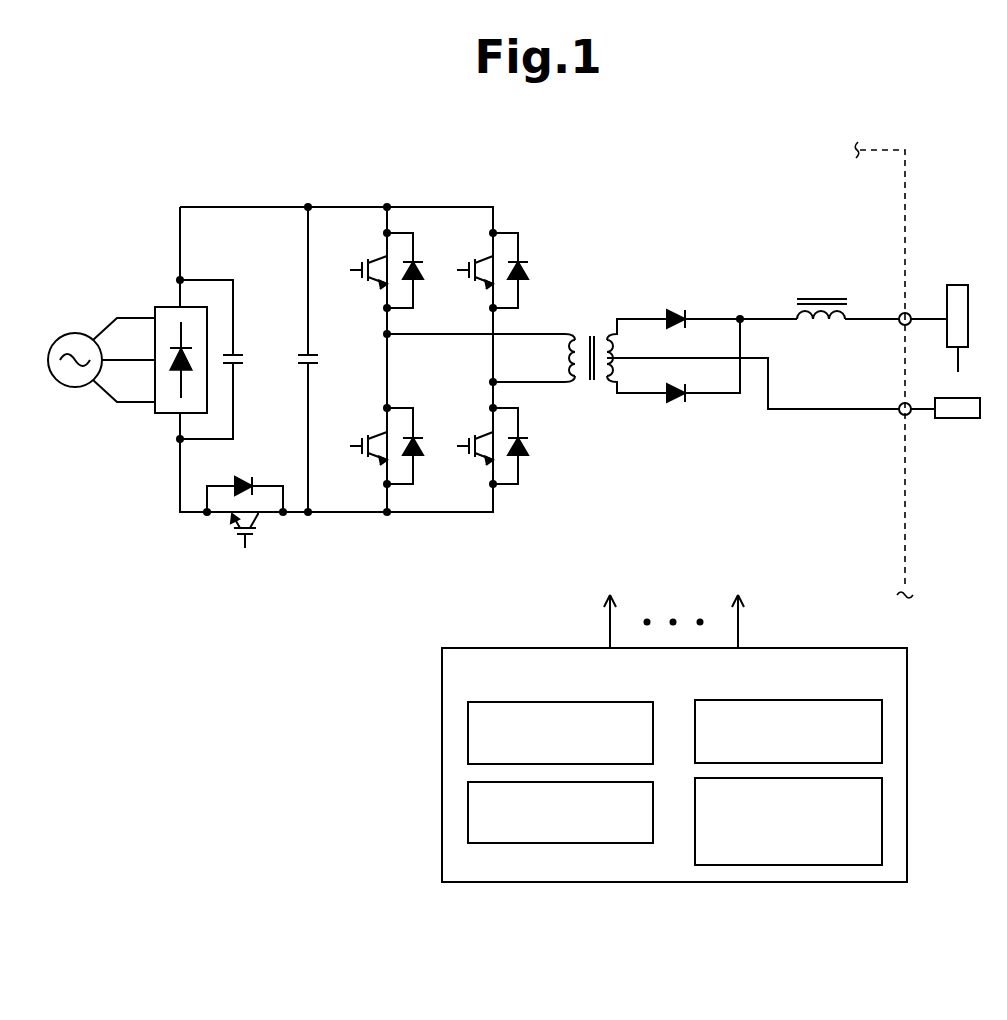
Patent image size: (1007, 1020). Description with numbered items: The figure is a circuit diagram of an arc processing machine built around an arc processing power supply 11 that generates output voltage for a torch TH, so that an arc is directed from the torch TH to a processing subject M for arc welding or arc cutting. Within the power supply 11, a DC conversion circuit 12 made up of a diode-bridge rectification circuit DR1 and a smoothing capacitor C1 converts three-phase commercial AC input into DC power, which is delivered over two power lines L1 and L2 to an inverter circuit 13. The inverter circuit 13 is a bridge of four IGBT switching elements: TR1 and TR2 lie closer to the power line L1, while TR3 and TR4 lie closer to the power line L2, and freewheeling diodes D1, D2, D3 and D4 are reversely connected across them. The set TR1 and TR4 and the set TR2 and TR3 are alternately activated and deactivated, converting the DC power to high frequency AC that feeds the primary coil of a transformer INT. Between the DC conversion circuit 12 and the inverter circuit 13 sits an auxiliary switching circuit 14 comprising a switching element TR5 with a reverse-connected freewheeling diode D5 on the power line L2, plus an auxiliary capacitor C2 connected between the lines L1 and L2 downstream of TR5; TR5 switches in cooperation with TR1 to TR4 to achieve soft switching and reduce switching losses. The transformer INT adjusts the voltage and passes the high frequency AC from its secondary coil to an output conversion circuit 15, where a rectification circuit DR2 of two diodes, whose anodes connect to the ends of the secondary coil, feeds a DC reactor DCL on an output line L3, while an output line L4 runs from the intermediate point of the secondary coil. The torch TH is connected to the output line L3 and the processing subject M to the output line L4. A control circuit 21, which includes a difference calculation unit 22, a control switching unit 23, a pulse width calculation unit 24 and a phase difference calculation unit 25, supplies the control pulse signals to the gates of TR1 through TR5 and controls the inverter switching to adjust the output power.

The arc processing power supply 11 is at (883, 149).
The DC conversion circuit 12 is at (145, 260).
The inverter circuit 13 is at (568, 179).
The auxiliary switching circuit 14 is at (193, 557).
The output conversion circuit 15 is at (637, 239).
The control circuit 21 is at (862, 648).
The difference calculation unit 22 is at (882, 729).
The control switching unit 23 is at (882, 820).
The pulse width calculation unit 24 is at (468, 737).
The phase difference calculation unit 25 is at (468, 817).
The rectification circuit DR1 is at (153, 312).
The rectification circuit DR2 is at (703, 288).
The smoothing capacitor C1 is at (239, 357).
The auxiliary capacitor C2 is at (314, 357).
The power line L1 is at (318, 205).
The power line L2 is at (333, 514).
The output line L3 is at (870, 317).
The output line L4 is at (870, 411).
The switching element TR1 is at (362, 265).
The switching element TR2 is at (470, 280).
The switching element TR3 is at (362, 442).
The switching element TR4 is at (470, 458).
The switching element TR5 is at (233, 534).
The freewheeling diode D1 is at (422, 261).
The freewheeling diode D2 is at (527, 260).
The freewheeling diode D3 is at (422, 438).
The freewheeling diode D4 is at (527, 438).
The freewheeling diode D5 is at (254, 479).
The transformer INT is at (597, 334).
The DC reactor DCL is at (818, 301).
The torch TH is at (954, 284).
The processing subject M is at (960, 419).